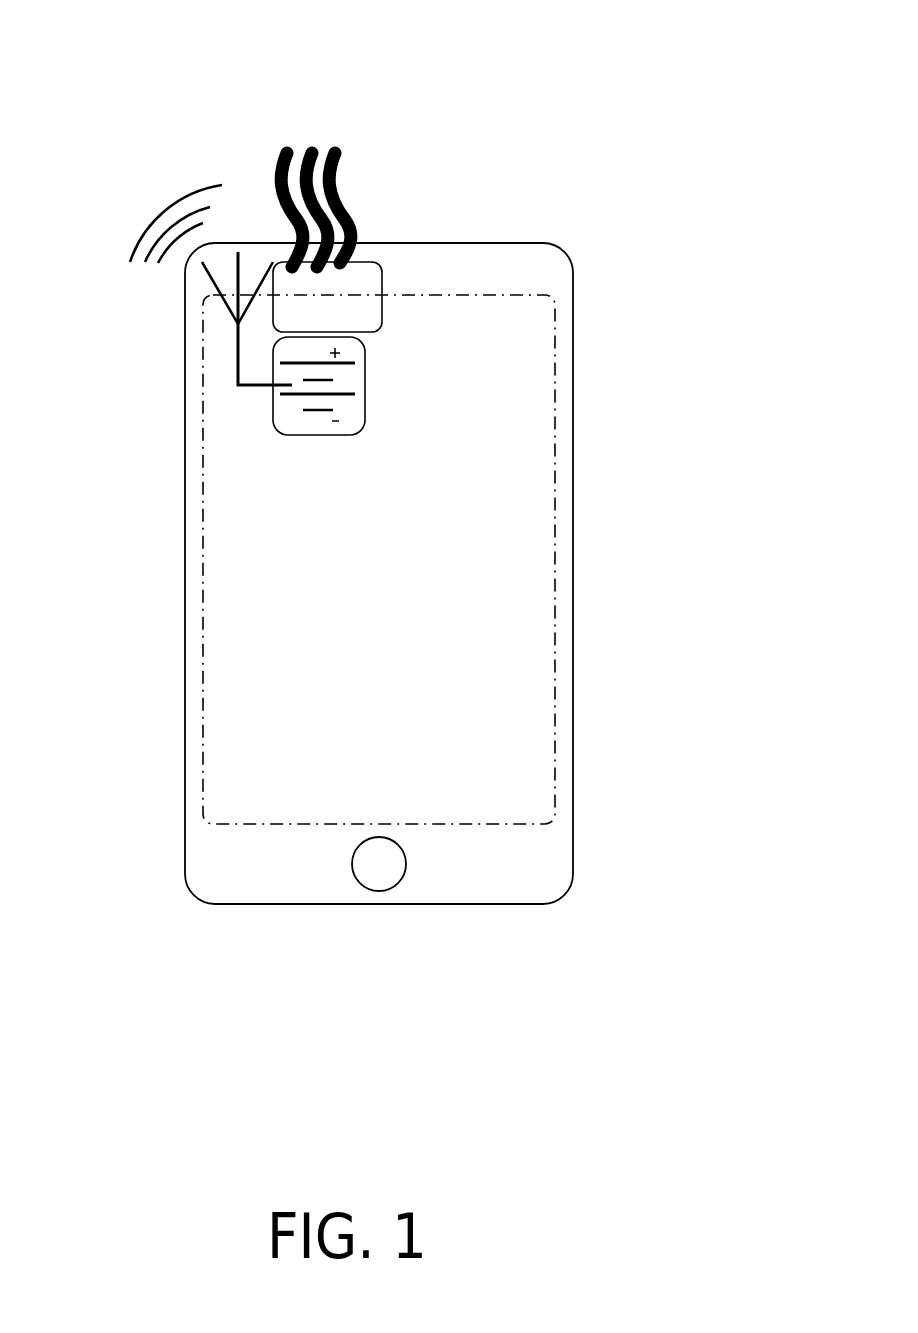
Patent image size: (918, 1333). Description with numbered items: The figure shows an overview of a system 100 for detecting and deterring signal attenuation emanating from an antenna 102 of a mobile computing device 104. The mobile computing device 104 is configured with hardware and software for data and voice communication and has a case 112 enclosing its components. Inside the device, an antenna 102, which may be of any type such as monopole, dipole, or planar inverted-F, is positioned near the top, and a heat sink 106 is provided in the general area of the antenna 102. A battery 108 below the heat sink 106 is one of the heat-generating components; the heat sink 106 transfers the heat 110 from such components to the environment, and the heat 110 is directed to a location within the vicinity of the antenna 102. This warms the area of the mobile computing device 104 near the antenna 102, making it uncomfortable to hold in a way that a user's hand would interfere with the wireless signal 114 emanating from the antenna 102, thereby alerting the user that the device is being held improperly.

The system 100 is at (486, 51).
The antenna 102 is at (238, 366).
The mobile computing device 104 is at (230, 856).
The heat sink 106 is at (368, 277).
The battery 108 is at (278, 427).
The heat 110 is at (270, 126).
The case 112 is at (574, 453).
The wireless signal 114 is at (140, 207).